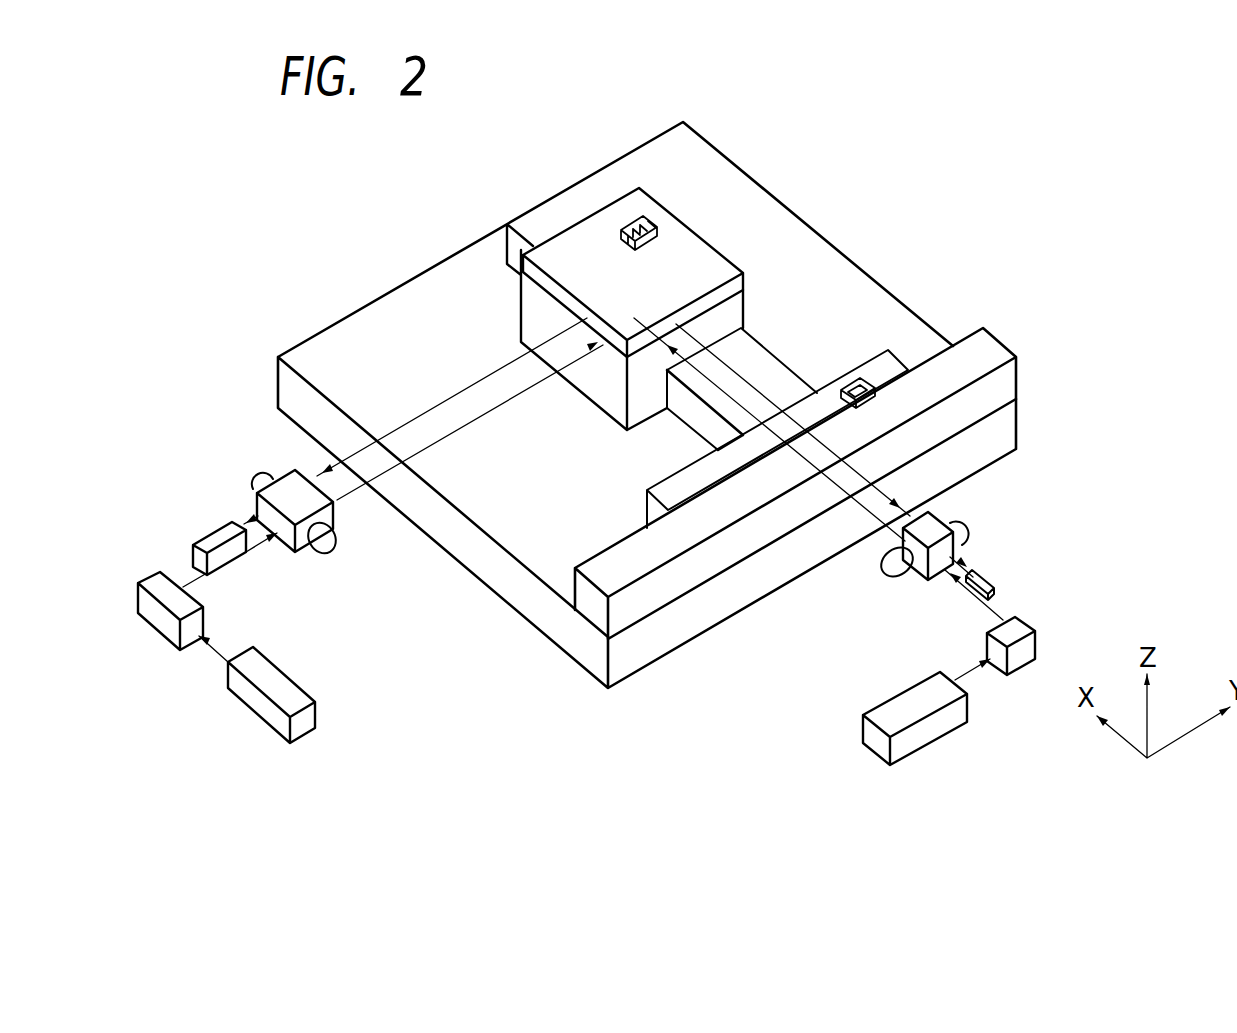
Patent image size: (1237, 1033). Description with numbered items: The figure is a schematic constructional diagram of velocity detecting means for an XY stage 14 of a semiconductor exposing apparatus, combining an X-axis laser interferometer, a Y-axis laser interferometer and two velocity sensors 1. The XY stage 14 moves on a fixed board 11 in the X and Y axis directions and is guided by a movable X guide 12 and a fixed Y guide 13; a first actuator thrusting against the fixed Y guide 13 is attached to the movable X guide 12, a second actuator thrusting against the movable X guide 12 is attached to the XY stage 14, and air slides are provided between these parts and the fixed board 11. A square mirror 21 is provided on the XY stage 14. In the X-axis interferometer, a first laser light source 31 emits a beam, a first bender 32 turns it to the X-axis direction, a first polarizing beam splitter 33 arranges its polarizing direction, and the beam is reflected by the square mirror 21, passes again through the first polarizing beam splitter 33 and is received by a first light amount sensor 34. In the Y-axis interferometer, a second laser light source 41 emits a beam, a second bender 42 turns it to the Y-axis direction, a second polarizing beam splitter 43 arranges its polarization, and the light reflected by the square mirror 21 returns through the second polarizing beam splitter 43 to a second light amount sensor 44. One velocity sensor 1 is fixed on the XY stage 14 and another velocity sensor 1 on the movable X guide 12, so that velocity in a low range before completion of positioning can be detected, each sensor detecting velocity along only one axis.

The velocity sensor 1 is at (655, 216).
The fixed board 11 is at (843, 260).
The movable X guide 12 is at (890, 363).
The fixed Y guide 13 is at (988, 343).
The XY stage 14 is at (585, 243).
The square mirror 21 is at (740, 263).
The first laser light source 31 is at (937, 735).
The first bender 32 is at (1022, 627).
The first polarizing beam splitter 33 is at (930, 523).
The first light amount sensor 34 is at (987, 578).
The second laser light source 41 is at (262, 708).
The second bender 42 is at (158, 625).
The second polarizing beam splitter 43 is at (323, 505).
The second light amount sensor 44 is at (210, 530).